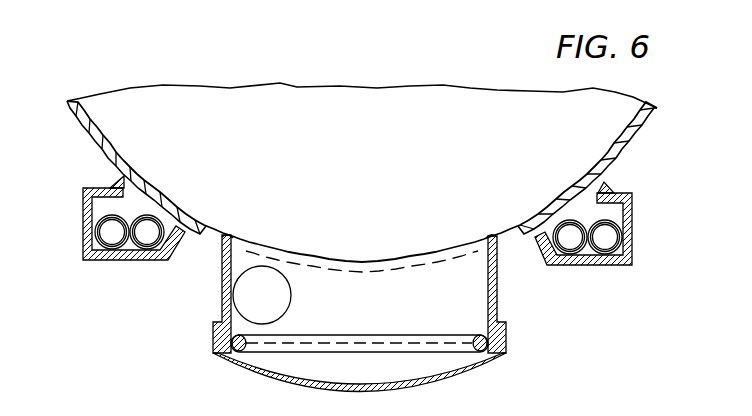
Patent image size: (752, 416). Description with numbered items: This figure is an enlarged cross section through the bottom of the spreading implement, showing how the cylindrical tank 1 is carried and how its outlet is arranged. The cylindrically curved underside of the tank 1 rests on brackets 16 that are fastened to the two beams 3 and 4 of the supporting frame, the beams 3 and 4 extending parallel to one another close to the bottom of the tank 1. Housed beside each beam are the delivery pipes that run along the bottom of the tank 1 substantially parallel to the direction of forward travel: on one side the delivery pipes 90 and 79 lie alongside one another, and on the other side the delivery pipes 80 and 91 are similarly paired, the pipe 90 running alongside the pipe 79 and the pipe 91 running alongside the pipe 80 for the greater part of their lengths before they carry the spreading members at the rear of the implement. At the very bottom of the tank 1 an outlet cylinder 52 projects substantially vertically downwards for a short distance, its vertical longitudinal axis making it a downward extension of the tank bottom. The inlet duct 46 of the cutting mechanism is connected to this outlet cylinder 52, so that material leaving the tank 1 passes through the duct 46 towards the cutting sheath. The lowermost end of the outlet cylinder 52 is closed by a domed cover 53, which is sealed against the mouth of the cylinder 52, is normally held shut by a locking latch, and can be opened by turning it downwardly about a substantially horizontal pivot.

The cylindrical tank 1 is at (378, 88).
The bracket 16 is at (104, 161).
The beam 3 is at (83, 206).
The beam 4 is at (633, 220).
The delivery pipe 90 is at (97, 261).
The delivery pipe 79 is at (164, 259).
The delivery pipe 80 is at (580, 258).
The delivery pipe 91 is at (612, 262).
The outlet cylinder 52 is at (497, 299).
The inlet duct 46 is at (282, 299).
The domed cover 53 is at (282, 372).